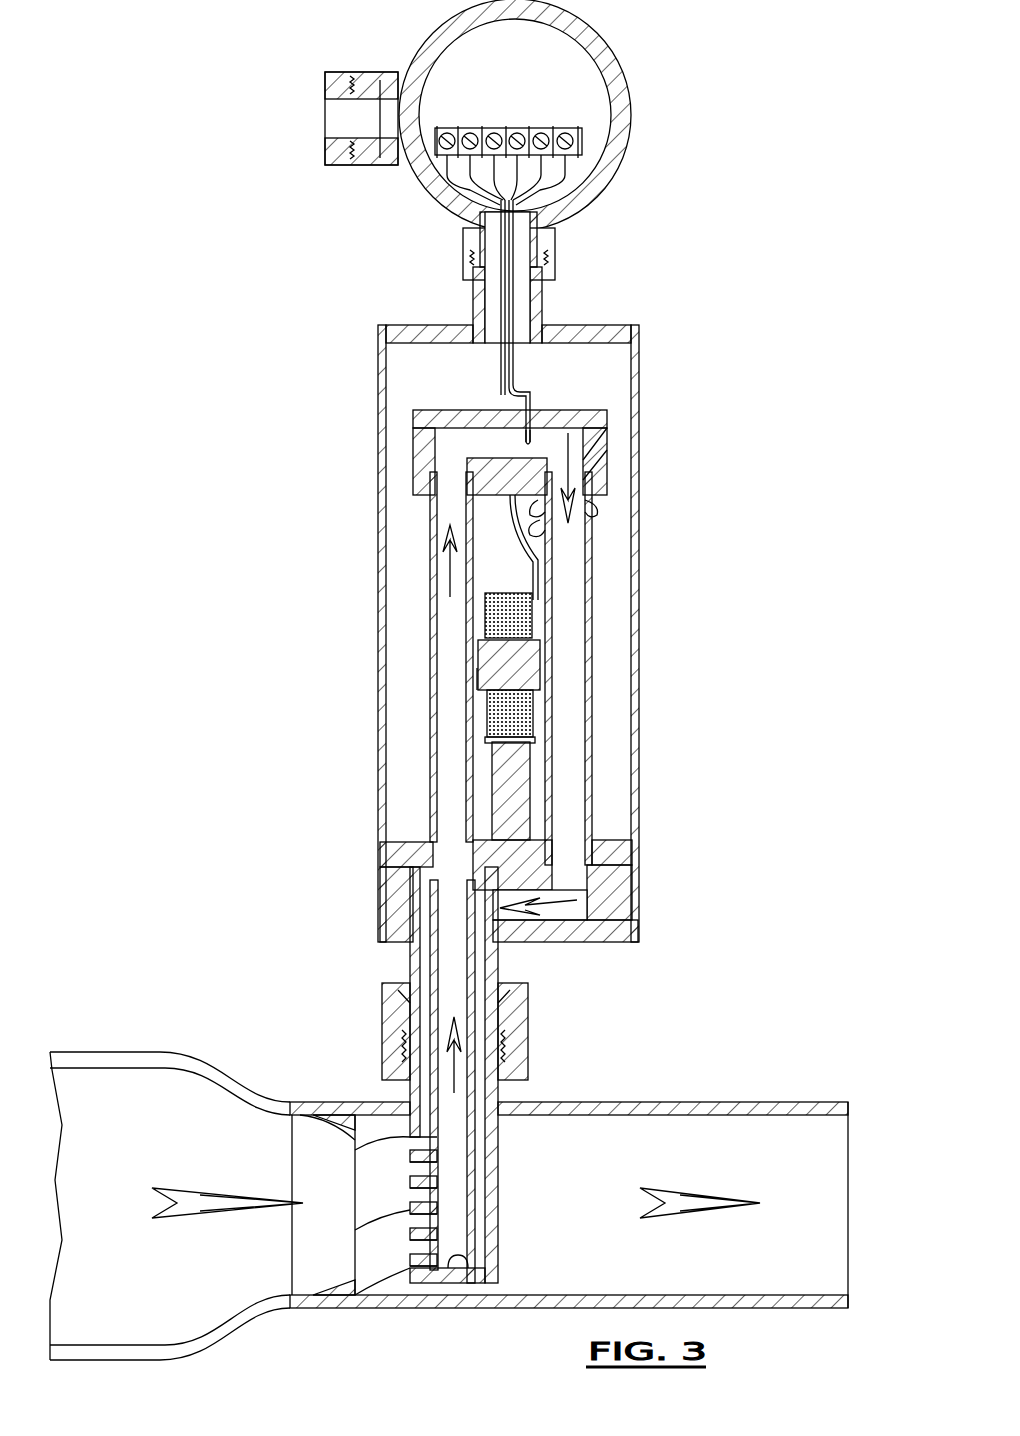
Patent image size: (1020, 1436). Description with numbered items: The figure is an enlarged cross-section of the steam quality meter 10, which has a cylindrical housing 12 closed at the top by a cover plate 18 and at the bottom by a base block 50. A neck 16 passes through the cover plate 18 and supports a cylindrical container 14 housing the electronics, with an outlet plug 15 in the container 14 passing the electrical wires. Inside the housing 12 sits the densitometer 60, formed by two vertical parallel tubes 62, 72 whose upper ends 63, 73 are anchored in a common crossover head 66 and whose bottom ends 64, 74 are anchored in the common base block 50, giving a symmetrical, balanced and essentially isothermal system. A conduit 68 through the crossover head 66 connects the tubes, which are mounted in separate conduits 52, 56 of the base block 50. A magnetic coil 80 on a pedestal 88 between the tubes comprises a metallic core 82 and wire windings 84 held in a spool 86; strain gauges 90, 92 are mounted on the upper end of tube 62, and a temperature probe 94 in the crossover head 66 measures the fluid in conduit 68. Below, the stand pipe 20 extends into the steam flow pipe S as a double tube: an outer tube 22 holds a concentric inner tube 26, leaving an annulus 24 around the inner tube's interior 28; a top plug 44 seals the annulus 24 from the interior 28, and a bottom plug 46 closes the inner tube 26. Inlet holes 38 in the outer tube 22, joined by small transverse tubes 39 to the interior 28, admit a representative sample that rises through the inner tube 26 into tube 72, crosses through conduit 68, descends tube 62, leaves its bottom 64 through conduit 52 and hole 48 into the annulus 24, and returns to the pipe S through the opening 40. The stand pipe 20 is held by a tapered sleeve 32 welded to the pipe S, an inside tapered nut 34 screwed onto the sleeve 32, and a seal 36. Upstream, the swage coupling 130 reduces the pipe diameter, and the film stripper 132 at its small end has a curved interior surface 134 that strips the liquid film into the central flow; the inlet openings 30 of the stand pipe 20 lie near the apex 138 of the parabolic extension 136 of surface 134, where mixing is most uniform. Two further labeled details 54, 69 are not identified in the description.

The steam quality meter 10 is at (636, 322).
The cylindrical housing 12 is at (378, 356).
The cylindrical container 14 is at (632, 92).
The outlet plug 15 is at (325, 129).
The neck 16 is at (545, 298).
The cover plate 18 is at (415, 325).
The stand pipe 20 is at (505, 963).
The outer tube 22 is at (498, 1150).
The annulus 24 is at (480, 1177).
The inner tube 26 is at (473, 1197).
The interior of inner tube 28 is at (460, 1227).
The inlet openings 30 is at (532, 1022).
The tapered sleeve 32 is at (398, 1028).
The inside tapered nut 34 is at (383, 1008).
The seal 36 is at (408, 998).
The inlet holes 38 is at (413, 1223).
The small transverse tubes 39 is at (447, 1240).
The opening 40 is at (482, 1283).
The top plug 44 is at (415, 868).
The bottom plug 46 is at (457, 1285).
The hole 48 is at (492, 907).
The base block 50 is at (385, 913).
The conduit 52 is at (594, 940).
The side block 54 is at (642, 908).
The conduit 56 is at (460, 867).
The densitometer 60 is at (594, 548).
The tube 62 is at (592, 642).
The upper end of tube 63 is at (585, 482).
The bottom of tube 64 is at (594, 827).
The crossover head 66 is at (425, 410).
The conduit 68 is at (470, 458).
The passage 69 is at (607, 443).
The tube 72 is at (430, 647).
The upper end of tube 73 is at (433, 505).
The bottom end of tube 74 is at (427, 853).
The magnetic coil 80 is at (544, 678).
The metallic core 82 is at (477, 668).
The wire windings 84 is at (492, 715).
The spool 86 is at (485, 613).
The pedestal 88 is at (490, 782).
The strain gauge 90 is at (597, 513).
The strain gauge 92 is at (533, 537).
The temperature probe 94 is at (547, 445).
The swage coupling 130 is at (212, 1073).
The film stripper 132 is at (373, 1117).
The interior surface 134 is at (350, 1123).
The parabolic extension 136 is at (373, 1153).
The apex 138 is at (373, 1220).
The steam flow pipe S is at (724, 1098).